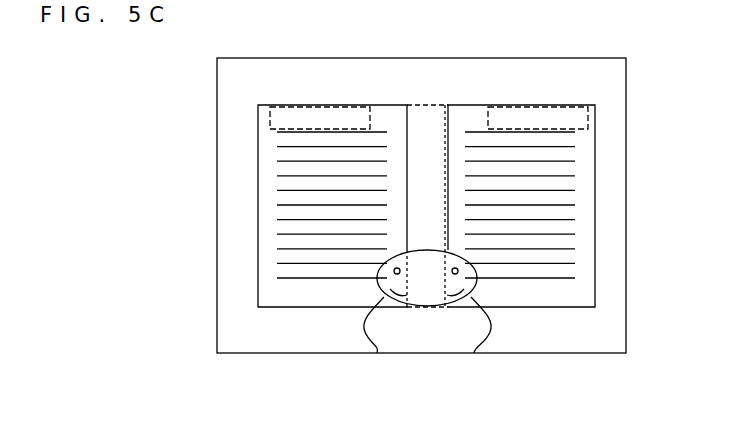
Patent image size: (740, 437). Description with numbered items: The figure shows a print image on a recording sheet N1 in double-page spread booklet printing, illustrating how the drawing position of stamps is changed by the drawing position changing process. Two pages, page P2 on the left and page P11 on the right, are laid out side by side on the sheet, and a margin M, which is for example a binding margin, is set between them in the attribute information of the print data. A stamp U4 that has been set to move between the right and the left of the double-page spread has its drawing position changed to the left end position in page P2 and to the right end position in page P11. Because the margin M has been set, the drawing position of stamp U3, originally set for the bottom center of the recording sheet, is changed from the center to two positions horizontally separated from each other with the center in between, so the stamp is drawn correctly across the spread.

The recording sheet N1 is at (611, 58).
The page P2 is at (367, 103).
The page P11 is at (487, 103).
The stamp U4 is at (258, 105).
The stamp U3 is at (377, 353).
The margin M is at (428, 306).